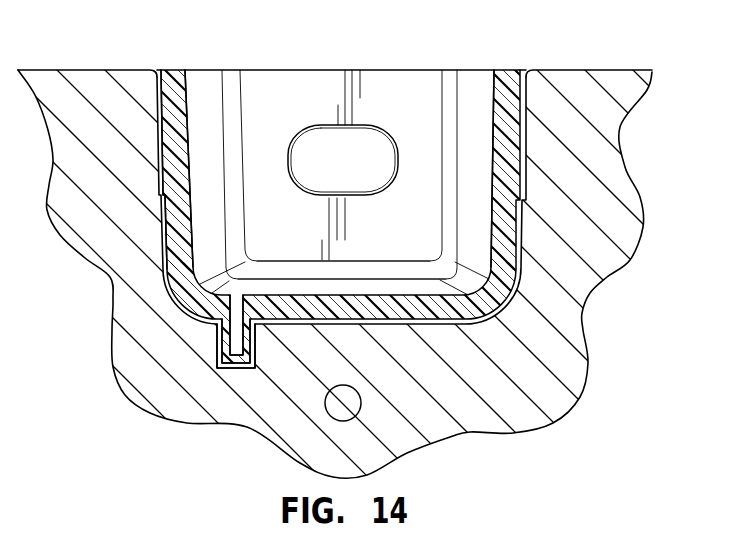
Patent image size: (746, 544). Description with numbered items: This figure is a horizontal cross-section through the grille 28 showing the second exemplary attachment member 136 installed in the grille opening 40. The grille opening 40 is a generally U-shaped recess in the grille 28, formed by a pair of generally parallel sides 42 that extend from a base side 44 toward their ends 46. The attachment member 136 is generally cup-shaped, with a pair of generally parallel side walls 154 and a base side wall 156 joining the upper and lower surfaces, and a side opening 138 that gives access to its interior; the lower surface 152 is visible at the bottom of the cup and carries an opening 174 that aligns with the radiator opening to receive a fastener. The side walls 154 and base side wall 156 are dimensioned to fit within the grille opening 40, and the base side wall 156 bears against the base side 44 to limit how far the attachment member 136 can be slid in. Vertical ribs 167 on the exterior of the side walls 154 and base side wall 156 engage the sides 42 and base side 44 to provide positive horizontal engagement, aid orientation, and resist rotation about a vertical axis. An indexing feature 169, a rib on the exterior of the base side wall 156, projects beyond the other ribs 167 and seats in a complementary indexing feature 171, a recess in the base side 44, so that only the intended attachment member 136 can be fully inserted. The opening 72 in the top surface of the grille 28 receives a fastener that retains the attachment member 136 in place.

The grille 28 is at (578, 92).
The grille opening 40 is at (168, 134).
The sides 42 is at (175, 148).
The base side 44 is at (378, 321).
The ends 46 is at (136, 68).
The opening 72 is at (354, 404).
The second exemplary attachment member 136 is at (397, 66).
The side opening 138 is at (318, 104).
The lower surface 152 is at (297, 76).
The side walls 154 is at (198, 112).
The base side wall 156 is at (278, 273).
The vertical ribs 167 is at (162, 196).
The indexing feature 169 is at (236, 346).
The indexing feature 171 is at (254, 342).
The opening 174 is at (356, 162).